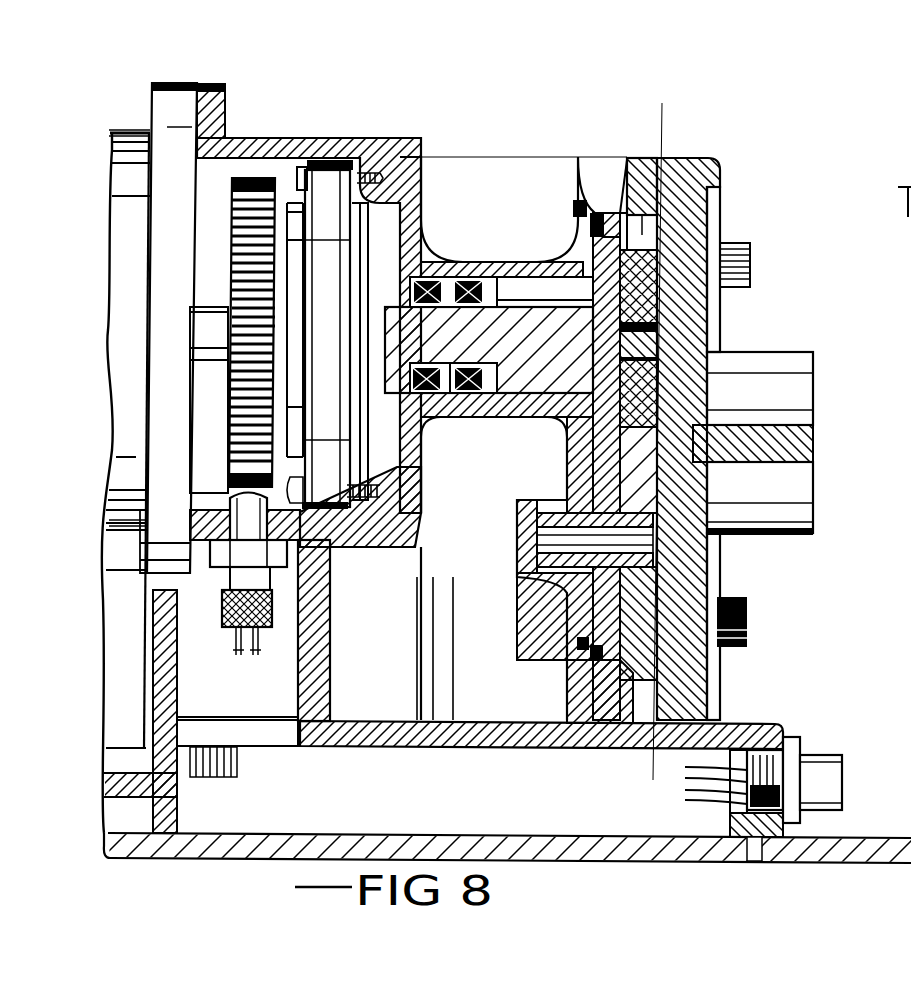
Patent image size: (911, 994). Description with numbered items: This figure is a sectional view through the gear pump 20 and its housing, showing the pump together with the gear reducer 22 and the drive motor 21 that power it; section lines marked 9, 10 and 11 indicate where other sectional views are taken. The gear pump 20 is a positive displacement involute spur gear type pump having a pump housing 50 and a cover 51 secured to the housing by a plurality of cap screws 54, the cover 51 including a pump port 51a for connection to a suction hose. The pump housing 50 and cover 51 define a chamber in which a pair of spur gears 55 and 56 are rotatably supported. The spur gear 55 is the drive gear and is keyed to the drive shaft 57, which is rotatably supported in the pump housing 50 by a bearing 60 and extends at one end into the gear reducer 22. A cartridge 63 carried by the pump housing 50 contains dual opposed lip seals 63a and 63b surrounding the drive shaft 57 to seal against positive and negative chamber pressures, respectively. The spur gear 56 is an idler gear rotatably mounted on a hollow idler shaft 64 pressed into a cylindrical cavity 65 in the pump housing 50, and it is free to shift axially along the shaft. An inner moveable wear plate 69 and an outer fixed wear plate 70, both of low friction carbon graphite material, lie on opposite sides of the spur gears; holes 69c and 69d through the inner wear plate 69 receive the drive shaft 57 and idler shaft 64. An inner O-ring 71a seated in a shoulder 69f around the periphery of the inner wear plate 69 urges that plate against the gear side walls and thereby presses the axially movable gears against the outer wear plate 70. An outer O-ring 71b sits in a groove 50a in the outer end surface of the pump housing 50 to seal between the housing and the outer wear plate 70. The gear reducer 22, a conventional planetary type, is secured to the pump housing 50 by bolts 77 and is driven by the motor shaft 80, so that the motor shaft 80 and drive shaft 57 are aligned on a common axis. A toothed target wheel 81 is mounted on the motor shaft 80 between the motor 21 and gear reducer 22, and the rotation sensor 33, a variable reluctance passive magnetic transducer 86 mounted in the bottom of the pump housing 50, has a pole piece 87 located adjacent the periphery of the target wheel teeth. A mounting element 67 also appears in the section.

The support bracket 10 is at (94, 330).
The section line 11- 11 is at (500, 437).
The section line 9- 9 is at (662, 133).
The gear pump 20 is at (703, 135).
The drive motor 21 is at (128, 128).
The gear reducer 22 is at (383, 235).
The rotation sensor 33 is at (285, 640).
The pump housing 50 is at (330, 138).
The groove 50a is at (627, 160).
The cover 51 is at (720, 225).
The pump port 51a is at (805, 626).
The cap screws 54 is at (750, 266).
The spur gear 55 is at (660, 250).
The spur gear 56 is at (655, 592).
The drive shaft 57 is at (490, 276).
The bearing 60 is at (515, 272).
The cartridge 63 is at (450, 270).
The lip seal 63a is at (490, 359).
The lip seal 63b is at (425, 359).
The idler shaft 64 is at (553, 573).
The cylindrical cavity 65 is at (543, 560).
The ring 67 is at (518, 573).
The inner wear plate 69 is at (600, 213).
The hole 69c is at (670, 363).
The hole 69d is at (653, 493).
The shoulder 69f is at (567, 210).
The outer wear plate 70 is at (707, 170).
The inner O-ring 71a is at (575, 230).
The outer O-ring 71b is at (688, 150).
The bolts 77 is at (300, 160).
The motor shaft 80 is at (208, 307).
The target wheel 81 is at (243, 178).
The passive magnetic transducer 86 is at (234, 644).
The pole piece 87 is at (230, 492).